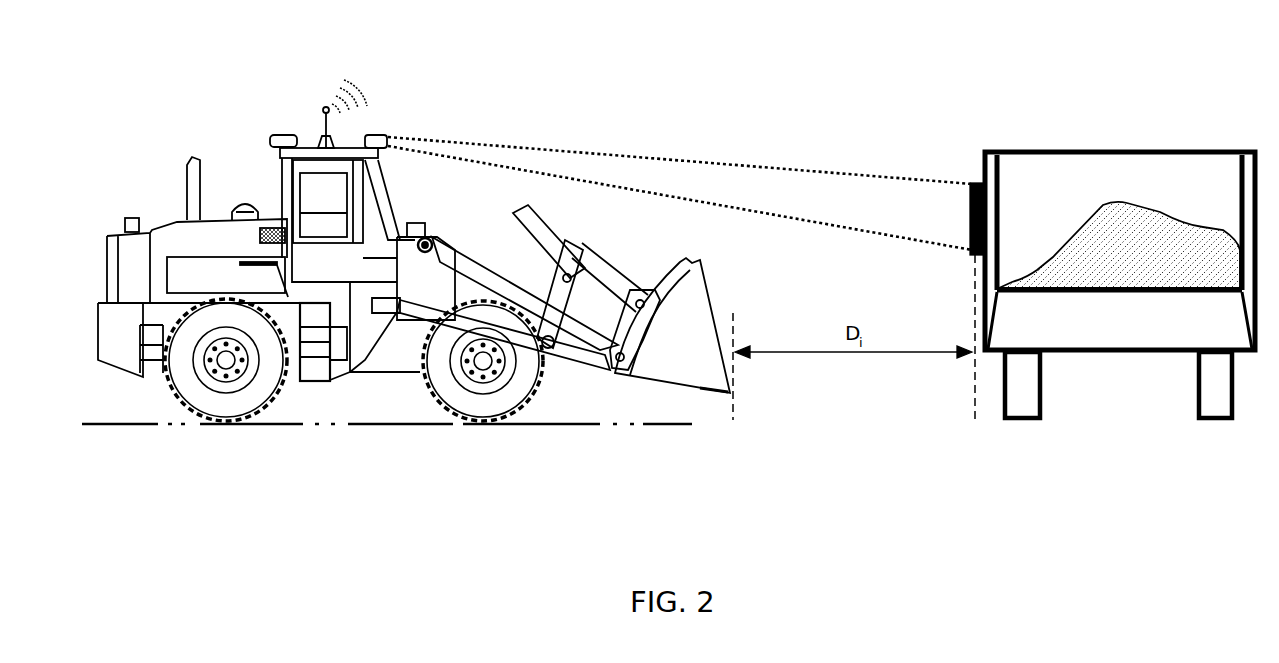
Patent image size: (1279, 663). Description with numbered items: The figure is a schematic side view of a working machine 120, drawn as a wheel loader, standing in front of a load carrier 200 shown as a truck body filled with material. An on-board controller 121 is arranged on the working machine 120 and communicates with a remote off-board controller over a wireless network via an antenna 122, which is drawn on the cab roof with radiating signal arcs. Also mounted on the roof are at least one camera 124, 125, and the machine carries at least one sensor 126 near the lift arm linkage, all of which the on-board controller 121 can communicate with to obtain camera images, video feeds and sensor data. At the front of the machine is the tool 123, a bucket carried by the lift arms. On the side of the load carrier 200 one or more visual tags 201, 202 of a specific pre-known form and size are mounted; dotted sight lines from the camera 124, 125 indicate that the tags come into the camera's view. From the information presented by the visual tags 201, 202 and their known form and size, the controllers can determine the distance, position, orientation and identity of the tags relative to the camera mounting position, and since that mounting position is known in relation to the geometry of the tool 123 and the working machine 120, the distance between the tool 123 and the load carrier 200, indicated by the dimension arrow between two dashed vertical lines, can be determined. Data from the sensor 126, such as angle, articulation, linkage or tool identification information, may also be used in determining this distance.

The working machine 120 is at (172, 130).
The on-board controller 121 is at (127, 220).
The antenna 122 is at (311, 108).
The tool 123 is at (690, 262).
The camera 124 is at (378, 131).
The camera 125 is at (284, 134).
The sensor 126 is at (409, 222).
The load carrier 200 is at (1040, 151).
The visual tag 201 is at (971, 184).
The visual tag 202 is at (977, 219).